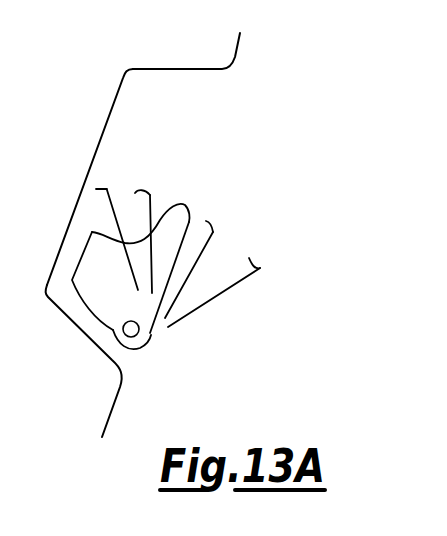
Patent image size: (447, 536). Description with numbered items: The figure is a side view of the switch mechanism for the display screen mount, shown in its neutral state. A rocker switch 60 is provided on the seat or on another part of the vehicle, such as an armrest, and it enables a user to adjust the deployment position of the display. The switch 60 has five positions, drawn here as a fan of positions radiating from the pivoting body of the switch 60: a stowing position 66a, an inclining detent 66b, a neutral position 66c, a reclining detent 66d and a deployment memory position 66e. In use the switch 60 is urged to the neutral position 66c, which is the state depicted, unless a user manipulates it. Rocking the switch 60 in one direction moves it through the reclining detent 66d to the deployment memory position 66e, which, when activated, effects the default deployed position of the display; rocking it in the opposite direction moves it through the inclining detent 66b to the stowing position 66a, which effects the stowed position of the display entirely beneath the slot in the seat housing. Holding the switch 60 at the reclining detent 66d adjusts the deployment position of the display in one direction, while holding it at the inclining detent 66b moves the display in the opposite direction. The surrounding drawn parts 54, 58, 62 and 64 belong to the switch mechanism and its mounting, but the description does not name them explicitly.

The sheet 54 is at (236, 57).
The panel 58 is at (142, 117).
The switch 60 is at (89, 227).
The pivot 62 is at (151, 335).
The arm 64 is at (117, 333).
The stowing position 66a is at (107, 190).
The inclining detent 66b is at (150, 195).
The neutral position 66c is at (191, 211).
The reclining detent 66d is at (213, 232).
The deployment memory position 66e is at (260, 268).